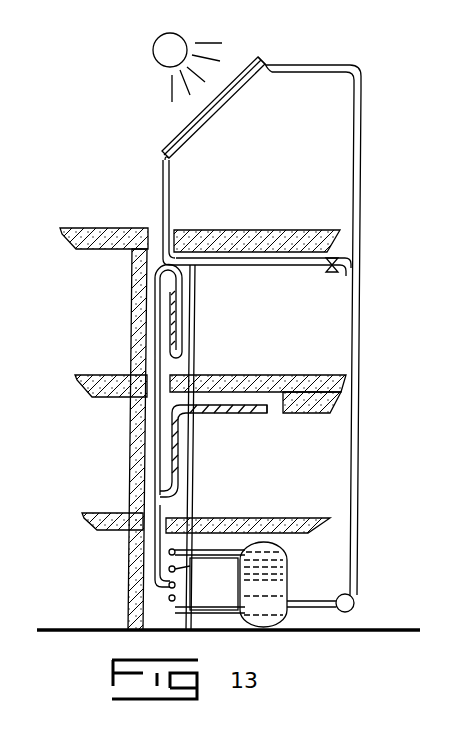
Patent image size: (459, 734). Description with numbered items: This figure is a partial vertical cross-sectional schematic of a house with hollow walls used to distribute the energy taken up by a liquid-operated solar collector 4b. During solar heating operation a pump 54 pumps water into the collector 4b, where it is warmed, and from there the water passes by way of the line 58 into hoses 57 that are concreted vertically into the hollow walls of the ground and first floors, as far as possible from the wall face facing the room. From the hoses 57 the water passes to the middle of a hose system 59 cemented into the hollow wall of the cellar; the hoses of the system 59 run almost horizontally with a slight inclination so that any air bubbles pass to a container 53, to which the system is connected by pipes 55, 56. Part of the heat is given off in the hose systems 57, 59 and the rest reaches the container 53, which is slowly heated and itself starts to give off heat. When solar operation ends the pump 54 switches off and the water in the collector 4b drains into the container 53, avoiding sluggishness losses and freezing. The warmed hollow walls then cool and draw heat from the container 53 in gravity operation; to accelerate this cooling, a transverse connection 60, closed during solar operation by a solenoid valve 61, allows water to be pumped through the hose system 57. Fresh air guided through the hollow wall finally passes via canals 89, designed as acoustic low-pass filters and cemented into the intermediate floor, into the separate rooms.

The collector 4b is at (186, 128).
The supply pipe 58 is at (160, 172).
The transverse connection 60 is at (272, 268).
The solenoid valve 61 is at (331, 277).
The hoses 57 is at (207, 343).
The canals 89 is at (275, 403).
The hose system 59 is at (202, 553).
The pipe 55 is at (233, 552).
The pipe 56 is at (205, 608).
The container 53 is at (288, 578).
The pump 54 is at (355, 597).